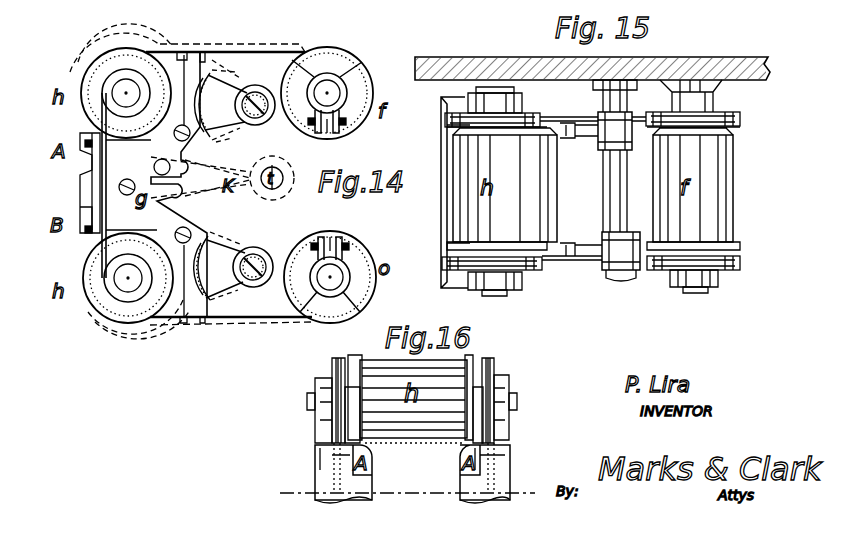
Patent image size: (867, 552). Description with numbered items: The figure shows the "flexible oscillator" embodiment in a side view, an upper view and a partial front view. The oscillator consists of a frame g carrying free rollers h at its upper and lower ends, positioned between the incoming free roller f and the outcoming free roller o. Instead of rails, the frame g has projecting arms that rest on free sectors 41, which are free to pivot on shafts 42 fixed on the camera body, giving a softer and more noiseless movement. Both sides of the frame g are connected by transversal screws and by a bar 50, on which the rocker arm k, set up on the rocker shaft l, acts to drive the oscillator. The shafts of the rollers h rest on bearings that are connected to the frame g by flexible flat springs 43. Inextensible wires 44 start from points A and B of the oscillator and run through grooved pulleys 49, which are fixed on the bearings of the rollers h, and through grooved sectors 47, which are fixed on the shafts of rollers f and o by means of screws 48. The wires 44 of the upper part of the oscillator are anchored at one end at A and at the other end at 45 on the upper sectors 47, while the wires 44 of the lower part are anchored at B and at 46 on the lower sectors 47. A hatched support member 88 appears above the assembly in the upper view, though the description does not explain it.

In FIG. 14, the free sector 41 is at (220, 186).
In FIG. 15, the free sector 41 is at (588, 136).
In FIG. 14, the shaft 42 is at (257, 96).
In FIG. 15, the shaft 42 is at (605, 192).
In FIG. 14, the flexible flat spring 43 is at (95, 119).
In FIG. 15, the flexible flat spring 43 is at (462, 296).
In FIG. 16, the flexible flat spring 43 is at (320, 436).
In FIG. 14, the inextensible wire 44 is at (222, 55).
In FIG. 15, the inextensible wire 44 is at (566, 117).
In FIG. 14, the wire anchoring point 45 is at (358, 80).
In FIG. 15, the wire anchoring point 45 is at (735, 115).
In FIG. 14, the wire anchoring point 46 is at (358, 289).
In FIG. 14, the grooved sector 47 is at (327, 185).
In FIG. 15, the grooved sector 47 is at (652, 290).
In FIG. 14, the screw 48 is at (347, 128).
In FIG. 14, the grooved pulley 49 is at (84, 62).
In FIG. 15, the grooved pulley 49 is at (526, 115).
In FIG. 16, the grooved pulley 49 is at (330, 368).
In FIG. 14, the bar 50 is at (144, 164).
In FIG. 15, the support beam 88 is at (760, 58).